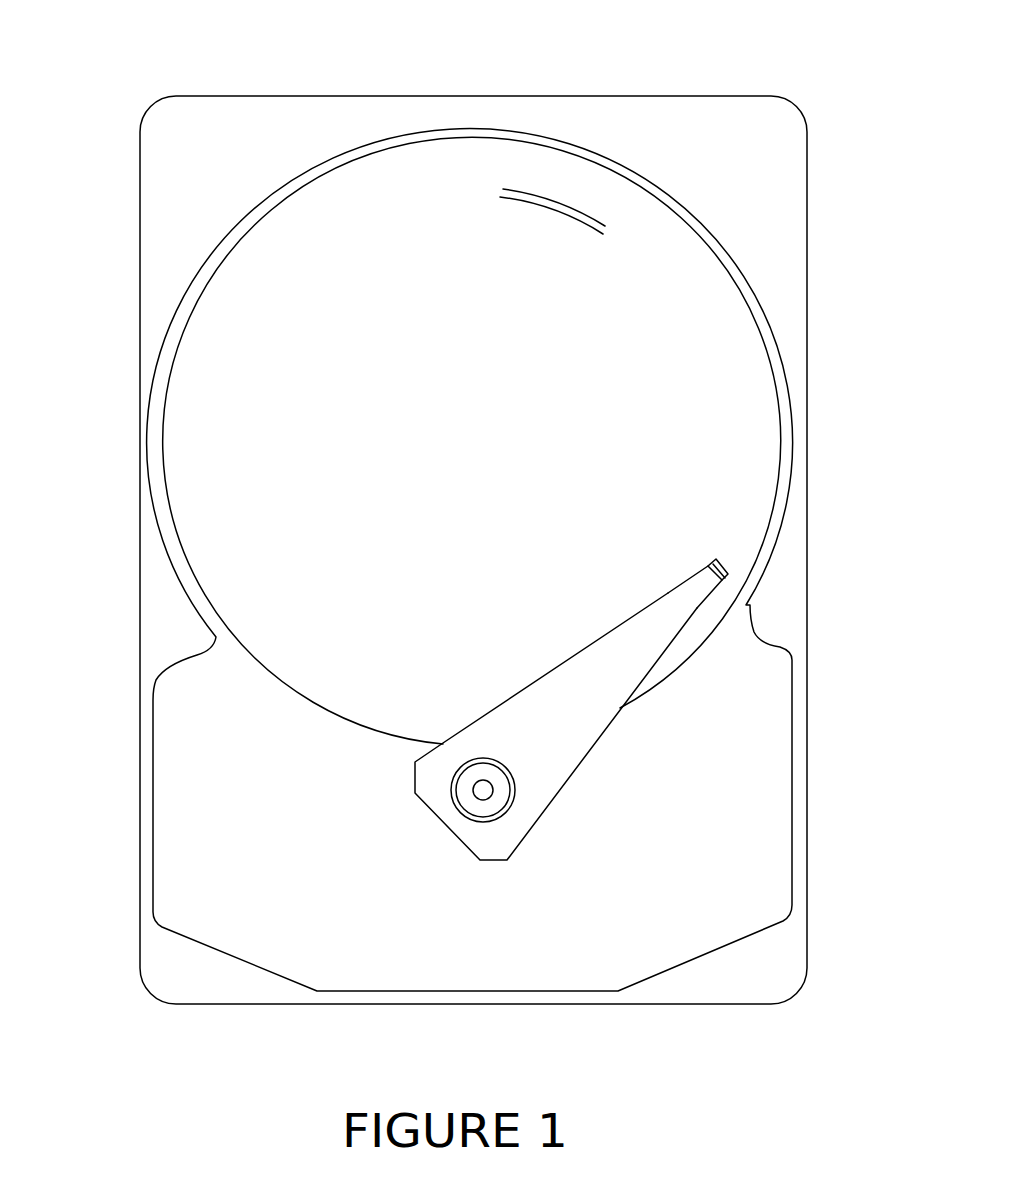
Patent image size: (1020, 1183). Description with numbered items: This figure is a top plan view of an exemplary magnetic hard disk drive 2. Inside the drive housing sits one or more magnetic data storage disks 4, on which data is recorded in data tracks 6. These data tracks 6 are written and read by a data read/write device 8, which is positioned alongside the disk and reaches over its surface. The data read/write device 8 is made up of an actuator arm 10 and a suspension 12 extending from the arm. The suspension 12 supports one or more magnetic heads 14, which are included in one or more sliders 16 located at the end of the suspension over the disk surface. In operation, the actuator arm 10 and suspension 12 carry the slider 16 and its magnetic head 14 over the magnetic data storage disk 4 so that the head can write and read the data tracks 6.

The magnetic hard disk drive 2 is at (98, 163).
The magnetic data storage disk 4 is at (350, 215).
The data tracks 6 is at (527, 188).
The data read/write device 8 is at (668, 687).
The actuator arm 10 is at (552, 733).
The suspension 12 is at (698, 590).
The magnetic head 14 is at (814, 547).
The slider 16 is at (720, 567).